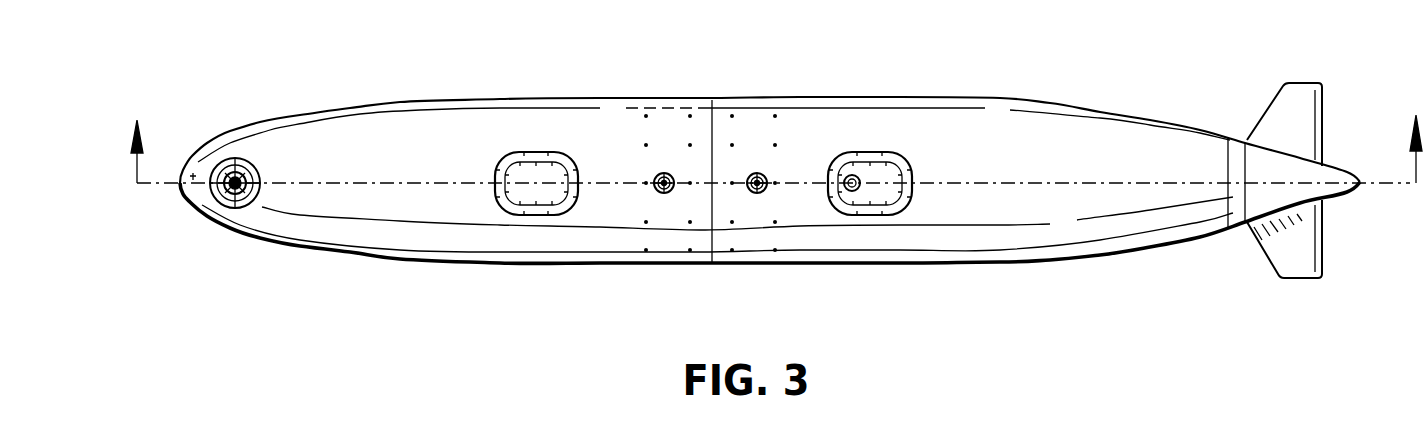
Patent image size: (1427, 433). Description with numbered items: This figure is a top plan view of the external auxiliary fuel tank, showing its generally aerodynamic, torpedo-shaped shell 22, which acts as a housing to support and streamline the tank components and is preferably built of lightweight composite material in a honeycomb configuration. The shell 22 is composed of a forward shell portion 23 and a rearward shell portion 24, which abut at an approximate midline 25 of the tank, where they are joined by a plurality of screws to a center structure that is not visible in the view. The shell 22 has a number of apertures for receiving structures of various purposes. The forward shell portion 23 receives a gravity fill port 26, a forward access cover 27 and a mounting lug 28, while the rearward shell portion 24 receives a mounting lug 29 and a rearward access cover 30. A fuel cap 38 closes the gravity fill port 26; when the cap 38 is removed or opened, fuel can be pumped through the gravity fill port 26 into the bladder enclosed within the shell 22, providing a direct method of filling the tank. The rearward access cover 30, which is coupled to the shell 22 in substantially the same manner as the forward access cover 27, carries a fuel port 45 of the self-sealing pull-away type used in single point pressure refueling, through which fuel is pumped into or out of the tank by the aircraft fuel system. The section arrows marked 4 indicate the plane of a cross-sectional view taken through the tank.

The section view line 4- 4 is at (774, 125).
The shell 22 is at (558, 275).
The forward shell portion 23 is at (427, 244).
The rearward shell portion 24 is at (1053, 237).
The midline 25 is at (712, 258).
The gravity fill port 26 is at (220, 166).
The forward access cover 27 is at (524, 172).
The mounting lug 28 is at (665, 172).
The mounting lug 29 is at (753, 172).
The rearward access cover 30 is at (874, 174).
The fuel cap 38 is at (220, 198).
The fuel port 45 is at (844, 170).